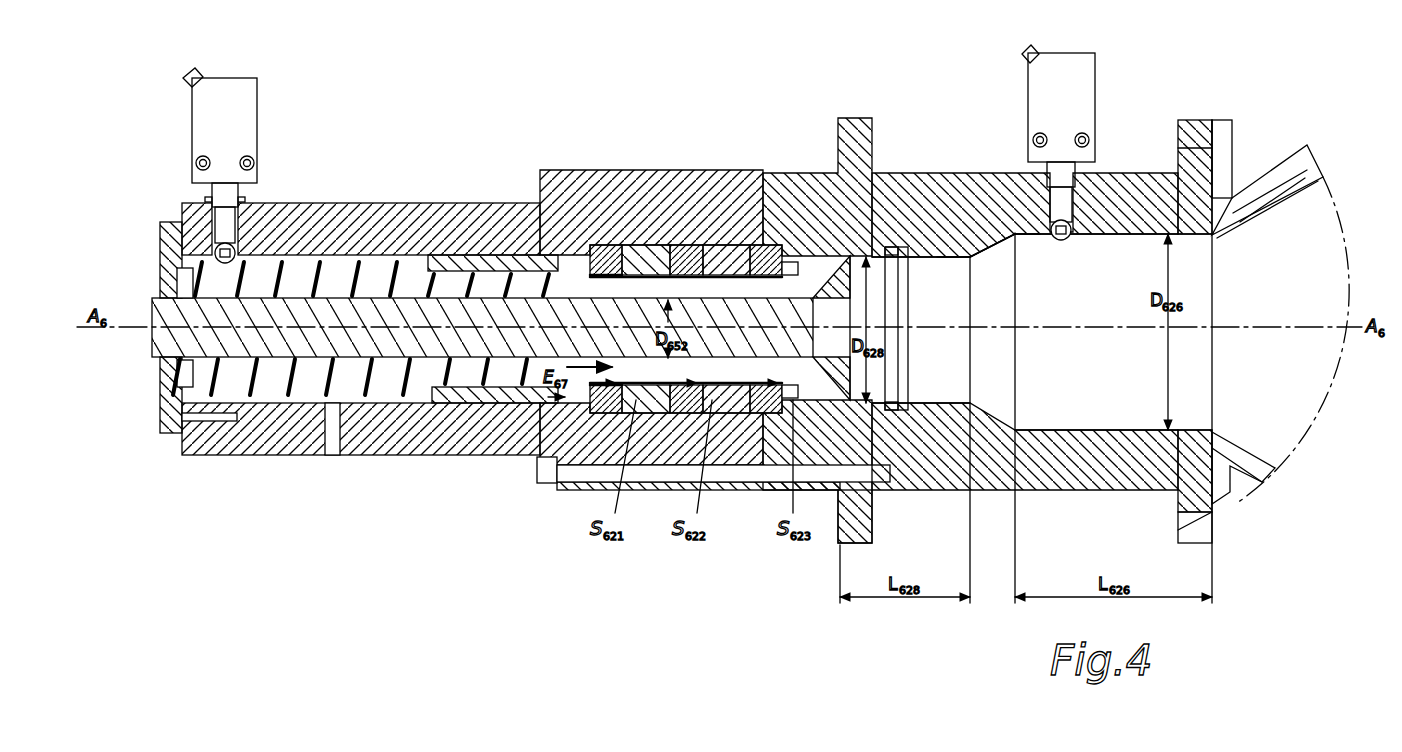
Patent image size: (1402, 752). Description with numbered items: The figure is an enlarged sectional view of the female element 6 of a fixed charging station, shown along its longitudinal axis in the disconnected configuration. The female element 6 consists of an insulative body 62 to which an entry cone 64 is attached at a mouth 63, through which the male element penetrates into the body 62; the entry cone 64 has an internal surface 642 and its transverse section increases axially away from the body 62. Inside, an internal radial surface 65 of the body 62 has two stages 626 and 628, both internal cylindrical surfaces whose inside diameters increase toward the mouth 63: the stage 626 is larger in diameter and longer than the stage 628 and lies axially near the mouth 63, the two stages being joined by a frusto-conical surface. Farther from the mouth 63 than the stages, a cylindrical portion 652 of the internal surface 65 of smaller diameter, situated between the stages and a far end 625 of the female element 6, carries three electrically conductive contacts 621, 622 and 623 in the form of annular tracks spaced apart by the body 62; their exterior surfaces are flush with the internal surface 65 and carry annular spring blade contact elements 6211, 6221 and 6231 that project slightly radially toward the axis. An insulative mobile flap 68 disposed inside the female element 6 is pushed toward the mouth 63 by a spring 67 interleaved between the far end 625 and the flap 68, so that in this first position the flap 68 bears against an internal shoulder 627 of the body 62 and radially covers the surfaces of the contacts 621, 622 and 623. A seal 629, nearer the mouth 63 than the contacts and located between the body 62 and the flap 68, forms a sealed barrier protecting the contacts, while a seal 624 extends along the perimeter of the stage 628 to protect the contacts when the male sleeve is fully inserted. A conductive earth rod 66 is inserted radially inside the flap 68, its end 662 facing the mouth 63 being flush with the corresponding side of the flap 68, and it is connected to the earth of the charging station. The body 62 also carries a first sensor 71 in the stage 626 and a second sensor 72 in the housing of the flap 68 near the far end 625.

The female element 6 is at (820, 536).
The body 62 is at (428, 222).
The electrically conductive contact 621 is at (590, 252).
The annular conductive contact element 6211 is at (606, 248).
The electrically conductive contact 622 is at (672, 268).
The annular conductive contact element 6221 is at (708, 272).
The electrically conductive contact 623 is at (754, 262).
The annular conductive contact element 6231 is at (796, 268).
The seal 624 is at (937, 256).
The far end 625 is at (170, 387).
The stage 626 is at (1083, 428).
The internal shoulder 627 is at (527, 405).
The stage 628 is at (940, 402).
The seal 629 is at (846, 250).
The mouth 63 is at (1216, 393).
The entry cone 64 is at (1283, 168).
The internal surface 642 is at (1268, 203).
The internal radial surface 65 is at (937, 262).
The portion of the internal surface 652 is at (632, 262).
The conductive earth rod 66 is at (172, 340).
The end of the earth rod 662 is at (866, 260).
The spring 67 is at (335, 390).
The insulative mobile flap 68 is at (468, 398).
The first sensor 71 is at (1058, 142).
The second sensor 72 is at (220, 165).